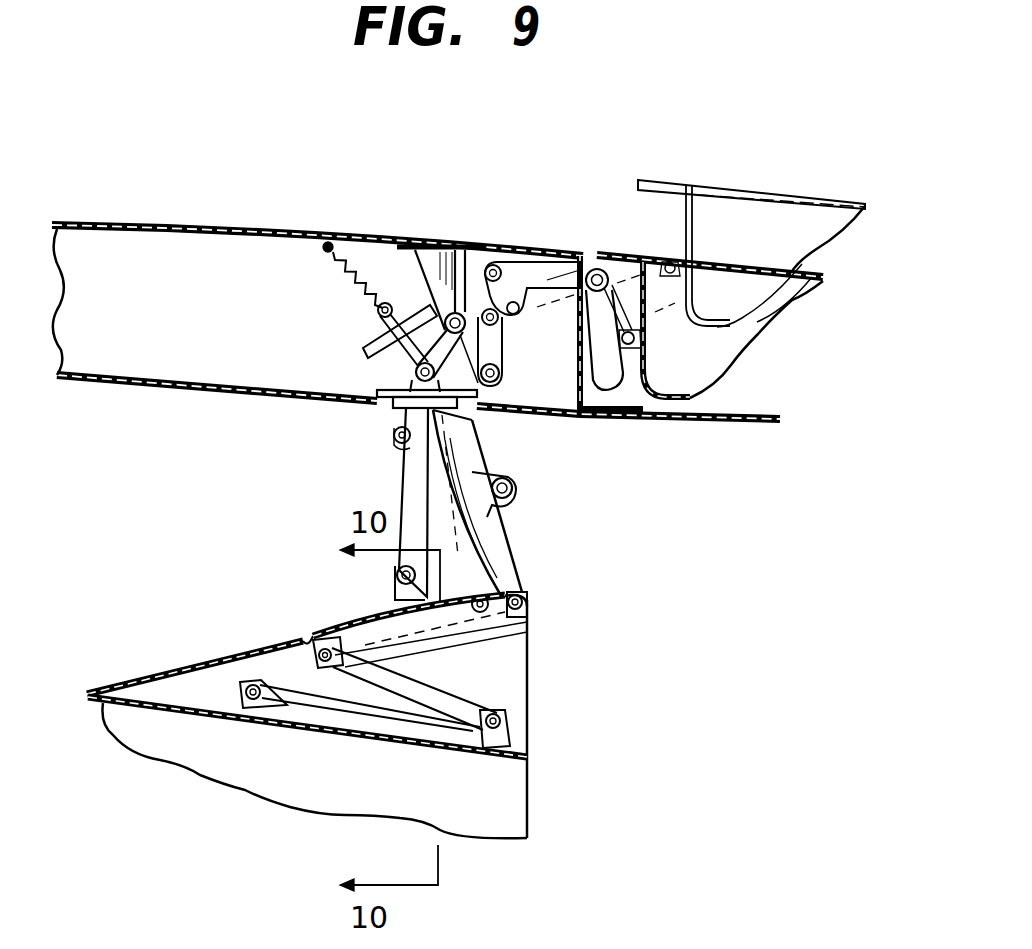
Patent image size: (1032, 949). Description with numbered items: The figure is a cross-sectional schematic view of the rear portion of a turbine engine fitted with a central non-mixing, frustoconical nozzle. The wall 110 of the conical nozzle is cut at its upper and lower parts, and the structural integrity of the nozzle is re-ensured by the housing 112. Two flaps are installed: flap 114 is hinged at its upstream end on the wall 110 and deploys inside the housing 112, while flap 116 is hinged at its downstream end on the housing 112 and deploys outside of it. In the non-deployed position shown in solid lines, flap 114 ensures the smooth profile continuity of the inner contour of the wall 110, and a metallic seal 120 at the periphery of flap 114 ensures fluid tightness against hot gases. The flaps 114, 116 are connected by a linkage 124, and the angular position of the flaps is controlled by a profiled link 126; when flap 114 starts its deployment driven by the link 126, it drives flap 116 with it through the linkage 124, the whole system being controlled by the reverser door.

The wall 110 is at (321, 697).
The housing 112 is at (235, 652).
The flap 114 is at (402, 730).
The flap 116 is at (358, 615).
The metallic seal 120 is at (265, 708).
The linkage 124 is at (460, 700).
The profiled link 126 is at (402, 488).